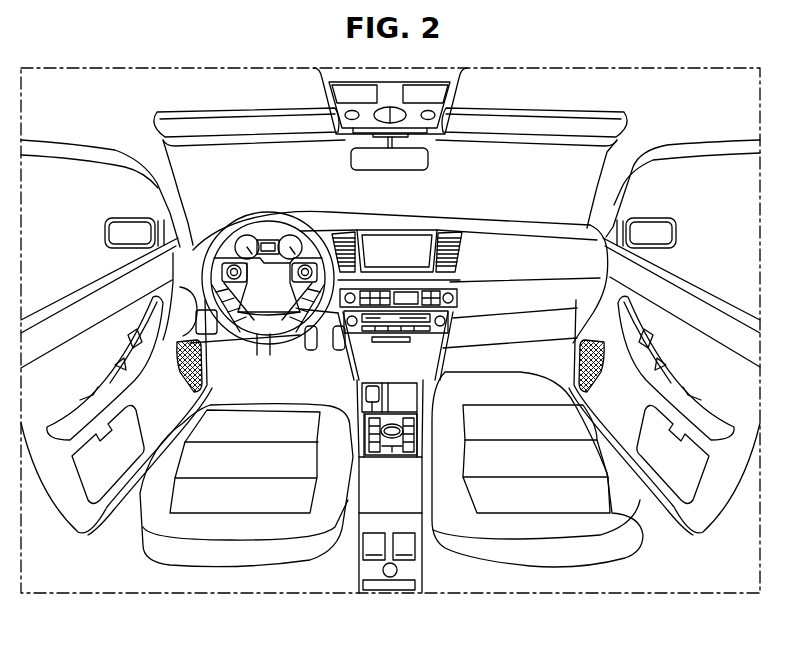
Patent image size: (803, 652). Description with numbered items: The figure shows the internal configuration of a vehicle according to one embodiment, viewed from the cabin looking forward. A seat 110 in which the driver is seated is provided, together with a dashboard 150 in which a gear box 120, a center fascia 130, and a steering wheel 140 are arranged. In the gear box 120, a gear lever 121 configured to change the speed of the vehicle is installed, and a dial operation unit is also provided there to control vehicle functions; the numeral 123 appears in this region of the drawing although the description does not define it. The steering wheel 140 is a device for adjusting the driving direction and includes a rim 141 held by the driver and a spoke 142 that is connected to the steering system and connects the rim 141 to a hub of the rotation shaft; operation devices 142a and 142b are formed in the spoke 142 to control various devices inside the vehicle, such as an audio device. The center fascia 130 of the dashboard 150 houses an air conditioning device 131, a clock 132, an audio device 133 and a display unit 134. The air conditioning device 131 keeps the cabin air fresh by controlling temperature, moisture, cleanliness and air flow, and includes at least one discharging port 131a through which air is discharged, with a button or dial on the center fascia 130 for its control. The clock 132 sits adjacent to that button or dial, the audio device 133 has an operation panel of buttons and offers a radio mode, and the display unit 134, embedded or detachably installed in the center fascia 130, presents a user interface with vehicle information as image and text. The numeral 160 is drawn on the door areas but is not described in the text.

The seat 110 is at (229, 553).
The gear box 120 is at (395, 486).
The gear lever 121 is at (362, 387).
The dial input device 123 is at (363, 434).
The center fascia 130 is at (431, 273).
The air conditioning device 131 is at (452, 297).
The discharging port 131a is at (450, 240).
The clock 132 is at (400, 297).
The audio device 133 is at (434, 313).
The display unit 134 is at (405, 225).
The steering wheel 140 is at (197, 246).
The rim 141 is at (258, 213).
The spoke 142 is at (196, 231).
The operation device 142a is at (231, 264).
The operation device 142b is at (308, 264).
The dashboard 150 is at (545, 225).
The door armrest 160 is at (177, 353).